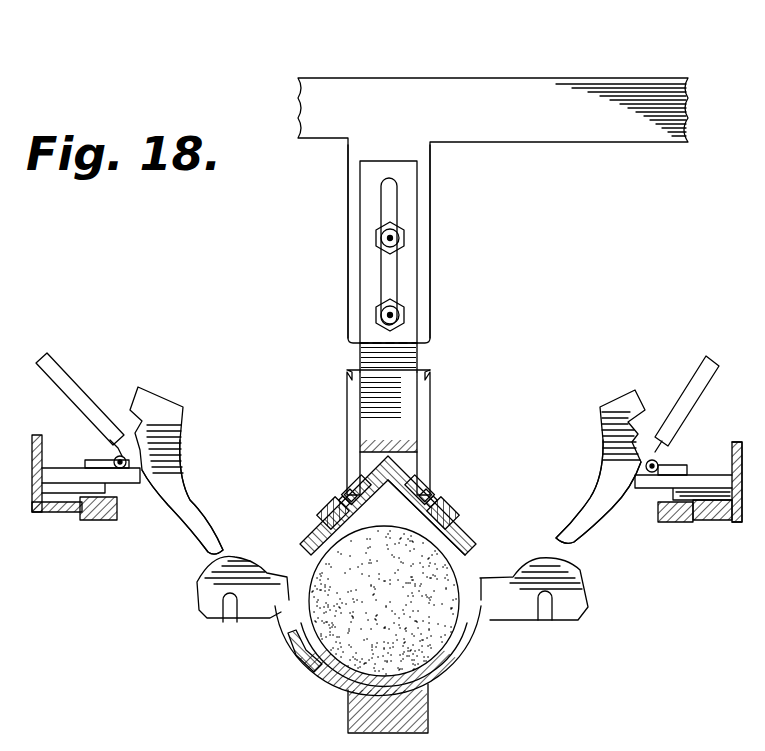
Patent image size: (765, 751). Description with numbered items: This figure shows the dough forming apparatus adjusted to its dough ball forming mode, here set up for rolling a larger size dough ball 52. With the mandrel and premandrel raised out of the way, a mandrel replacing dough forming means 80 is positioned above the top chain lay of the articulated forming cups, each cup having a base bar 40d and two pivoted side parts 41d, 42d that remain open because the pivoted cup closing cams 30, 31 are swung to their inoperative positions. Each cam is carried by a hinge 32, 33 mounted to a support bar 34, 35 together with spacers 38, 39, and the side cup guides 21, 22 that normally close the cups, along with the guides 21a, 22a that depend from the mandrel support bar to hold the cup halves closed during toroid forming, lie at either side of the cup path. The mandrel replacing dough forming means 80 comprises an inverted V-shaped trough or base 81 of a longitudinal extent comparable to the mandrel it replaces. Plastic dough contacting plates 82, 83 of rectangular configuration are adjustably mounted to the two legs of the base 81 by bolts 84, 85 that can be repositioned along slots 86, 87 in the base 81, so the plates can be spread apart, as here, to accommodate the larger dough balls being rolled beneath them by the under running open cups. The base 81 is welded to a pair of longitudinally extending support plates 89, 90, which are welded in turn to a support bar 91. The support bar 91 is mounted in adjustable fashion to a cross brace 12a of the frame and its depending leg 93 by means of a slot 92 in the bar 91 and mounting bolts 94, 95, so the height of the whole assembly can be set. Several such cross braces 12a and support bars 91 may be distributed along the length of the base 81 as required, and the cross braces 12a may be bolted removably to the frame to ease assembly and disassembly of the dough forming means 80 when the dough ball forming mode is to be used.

The cross brace 12a is at (550, 88).
The depending leg 93 is at (431, 176).
The slot 92 is at (390, 273).
The mounting bolt 94 is at (378, 233).
The mounting bolt 95 is at (378, 310).
The support bar 91 is at (405, 353).
The support plate 89 is at (432, 390).
The support plate 90 is at (348, 392).
The inverted V-shaped trough or base 81 is at (476, 531).
The bolt 84 is at (318, 506).
The bolt 85 is at (453, 503).
The slot 86 is at (343, 503).
The slot 87 is at (427, 497).
The ball 52 is at (366, 608).
The ball socket seat 40d is at (455, 664).
The dough contacting plate 82 is at (268, 615).
The dough contacting plate 83 is at (496, 627).
The mandrel replacing dough forming means 80 is at (290, 566).
The hinge 33 is at (143, 410).
The spacer 39 is at (168, 485).
The left arm link 42d is at (183, 510).
The spacer 38 is at (610, 490).
The right clamp arm 41d is at (598, 507).
The cup closing cam 31 is at (53, 358).
The support bar 35 is at (60, 472).
The side cup guide 21 is at (55, 512).
The guide 21a is at (102, 522).
The cup closing cam 30 is at (695, 380).
The hinge 32 is at (652, 457).
The side cup guide 22 is at (718, 520).
The guide 22a is at (676, 525).
The support bar 34 is at (711, 475).